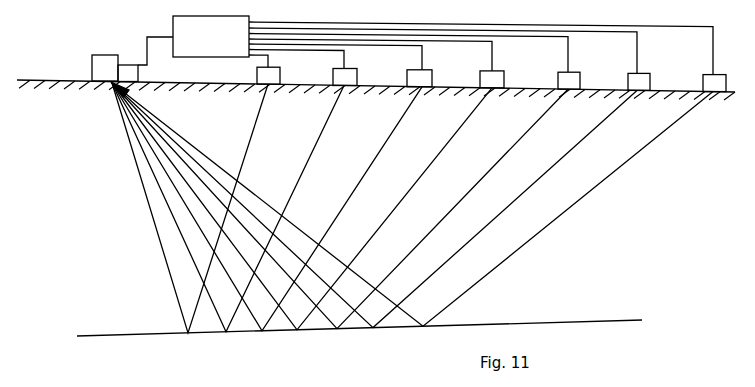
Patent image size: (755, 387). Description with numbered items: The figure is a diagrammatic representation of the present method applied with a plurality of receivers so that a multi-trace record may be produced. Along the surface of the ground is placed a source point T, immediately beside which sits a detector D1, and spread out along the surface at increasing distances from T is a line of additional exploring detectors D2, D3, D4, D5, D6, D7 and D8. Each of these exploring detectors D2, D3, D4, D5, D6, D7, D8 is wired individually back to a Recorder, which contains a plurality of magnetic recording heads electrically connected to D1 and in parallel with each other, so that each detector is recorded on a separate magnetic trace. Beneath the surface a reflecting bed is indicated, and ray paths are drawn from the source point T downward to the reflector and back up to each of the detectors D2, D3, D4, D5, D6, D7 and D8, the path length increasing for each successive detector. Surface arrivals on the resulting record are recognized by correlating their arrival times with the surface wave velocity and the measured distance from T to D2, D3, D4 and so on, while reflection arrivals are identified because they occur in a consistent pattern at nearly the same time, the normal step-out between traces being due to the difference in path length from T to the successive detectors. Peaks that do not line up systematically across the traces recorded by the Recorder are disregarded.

The source point T is at (110, 76).
The reference detector D1 is at (145, 59).
The exploring detector D2 is at (196, 194).
The exploring detector D3 is at (234, 191).
The exploring detector D4 is at (272, 187).
The exploring detector D5 is at (308, 184).
The exploring detector D6 is at (346, 181).
The exploring detector D7 is at (381, 178).
The exploring detector D8 is at (419, 174).
The recorder Recorder is at (211, 36).